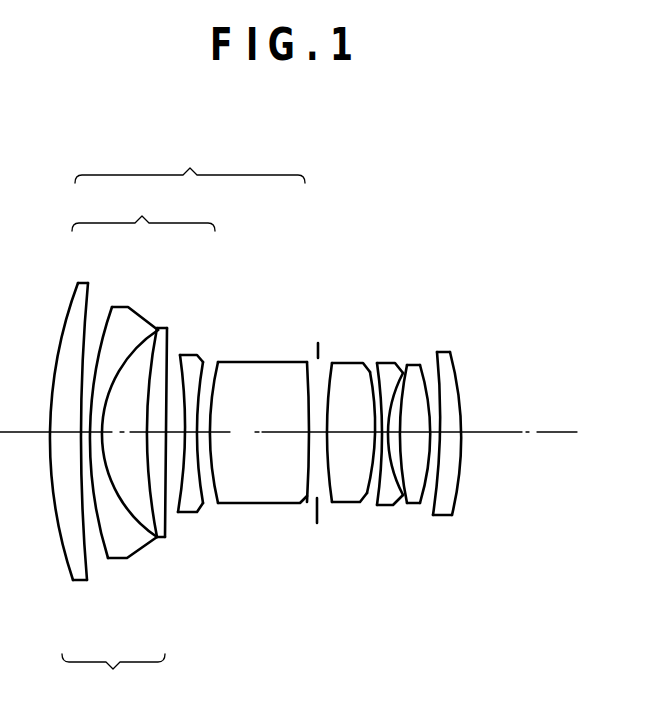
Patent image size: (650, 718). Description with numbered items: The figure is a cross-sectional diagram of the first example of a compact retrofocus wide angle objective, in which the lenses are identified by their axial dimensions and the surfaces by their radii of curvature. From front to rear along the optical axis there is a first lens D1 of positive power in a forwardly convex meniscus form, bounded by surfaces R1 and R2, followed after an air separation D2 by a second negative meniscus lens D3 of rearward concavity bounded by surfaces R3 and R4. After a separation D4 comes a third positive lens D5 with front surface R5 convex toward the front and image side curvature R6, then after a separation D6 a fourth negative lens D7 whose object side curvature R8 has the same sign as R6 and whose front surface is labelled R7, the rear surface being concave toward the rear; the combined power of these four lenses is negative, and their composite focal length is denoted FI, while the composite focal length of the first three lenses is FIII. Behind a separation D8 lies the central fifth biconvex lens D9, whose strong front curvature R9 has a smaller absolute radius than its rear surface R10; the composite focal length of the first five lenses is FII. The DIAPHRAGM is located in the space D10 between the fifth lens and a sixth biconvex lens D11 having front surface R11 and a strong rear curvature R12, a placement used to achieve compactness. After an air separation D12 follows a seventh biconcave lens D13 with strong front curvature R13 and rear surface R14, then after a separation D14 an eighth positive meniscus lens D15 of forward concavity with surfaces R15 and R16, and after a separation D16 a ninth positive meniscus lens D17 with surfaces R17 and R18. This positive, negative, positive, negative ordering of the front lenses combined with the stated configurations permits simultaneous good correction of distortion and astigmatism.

The radius of curvature of front surface of first lens R1 is at (68, 568).
The radius of curvature of rear surface of first lens R2 is at (90, 574).
The radius of curvature of front surface of second lens R3 is at (103, 558).
The radius of curvature of rear surface of second lens R4 is at (133, 510).
The radius of curvature of front surface of third lens R5 is at (151, 512).
The image side curvature of third lens R6 is at (163, 537).
The front surface of fourth lens R7 is at (180, 512).
The object side curvature of fourth lens R8 is at (200, 510).
The front curvature of fifth lens R9 is at (217, 505).
The radius of curvature of rear surface of fifth lens R10 is at (297, 505).
The radius of curvature of front surface of sixth lens R11 is at (328, 504).
The radius of curvature of rear surface of sixth lens R12 is at (358, 503).
The radius of curvature of front surface of seventh lens R13 is at (380, 506).
The radius of curvature of rear surface of seventh lens R14 is at (403, 506).
The radius of curvature of front surface of eighth lens R15 is at (407, 506).
The radius of curvature of rear surface of eighth lens R16 is at (420, 505).
The radius of curvature of front surface of ninth lens R17 is at (433, 517).
The radius of curvature of rear surface of ninth lens R18 is at (450, 518).
The first lens D1 is at (66, 432).
The axial air separation between first and second lenses D2 is at (85, 412).
The second negative meniscus lens D3 is at (95, 432).
The axial air separation between second and third lenses D4 is at (130, 432).
The third positive lens D5 is at (155, 432).
The axial air separation between third and fourth lenses D6 is at (175, 432).
The fourth negative lens D7 is at (190, 432).
The axial air separation between fourth and fifth lenses D8 is at (205, 432).
The fifth biconvex lens D9 is at (263, 420).
The axial air separation between fifth and sixth lenses D10 is at (317, 432).
The sixth biconvex lens D11 is at (359, 420).
The axial air separation between sixth and seventh lenses D12 is at (377, 432).
The seventh biconcave lens D13 is at (385, 432).
The axial air separation between seventh and eighth lenses D14 is at (395, 432).
The eighth positive lens D15 is at (410, 432).
The axial air separation between eighth and ninth lenses D16 is at (435, 432).
The ninth positive lens D17 is at (450, 432).
The composite focal length of first four lenses FI is at (143, 210).
The composite focal length of first five lenses FII is at (190, 161).
The composite focal length of first to third lenses FIII is at (113, 680).
The diaphragm DIAPHRAGM is at (318, 350).